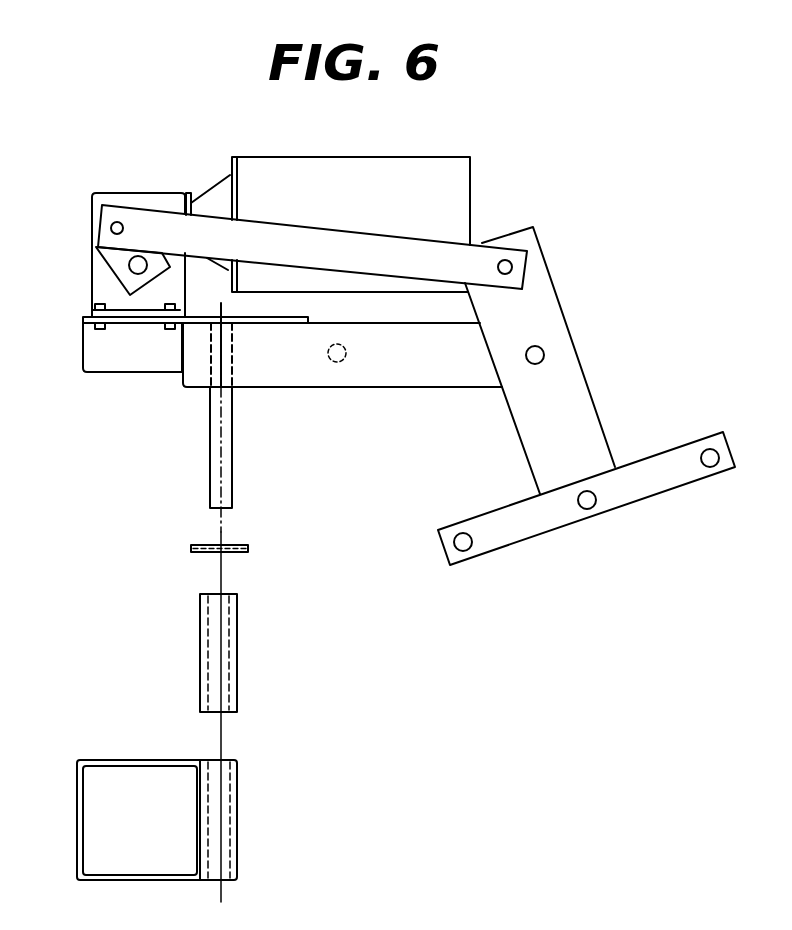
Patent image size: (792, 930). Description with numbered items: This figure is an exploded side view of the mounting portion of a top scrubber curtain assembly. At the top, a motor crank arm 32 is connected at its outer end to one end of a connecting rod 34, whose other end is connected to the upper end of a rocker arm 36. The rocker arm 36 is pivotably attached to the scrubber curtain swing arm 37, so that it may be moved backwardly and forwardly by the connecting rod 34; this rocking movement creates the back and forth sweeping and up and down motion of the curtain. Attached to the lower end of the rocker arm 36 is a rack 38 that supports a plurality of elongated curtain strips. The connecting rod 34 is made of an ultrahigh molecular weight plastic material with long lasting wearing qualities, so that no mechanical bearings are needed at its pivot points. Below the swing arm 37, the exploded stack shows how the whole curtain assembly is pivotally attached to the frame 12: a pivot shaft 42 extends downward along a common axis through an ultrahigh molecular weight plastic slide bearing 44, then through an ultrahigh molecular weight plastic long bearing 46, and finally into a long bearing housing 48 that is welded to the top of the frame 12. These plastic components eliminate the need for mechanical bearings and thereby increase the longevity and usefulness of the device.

The frame 12 is at (76, 799).
The motor crank arm 32 is at (112, 268).
The connecting rod 34 is at (317, 226).
The rocker arm 36 is at (583, 368).
The scrubber curtain swing arm 37 is at (397, 378).
The rack 38 is at (727, 466).
The pivot shaft 42 is at (208, 429).
The slide bearing 44 is at (250, 548).
The long bearing 46 is at (240, 650).
The long bearing housing 48 is at (241, 823).